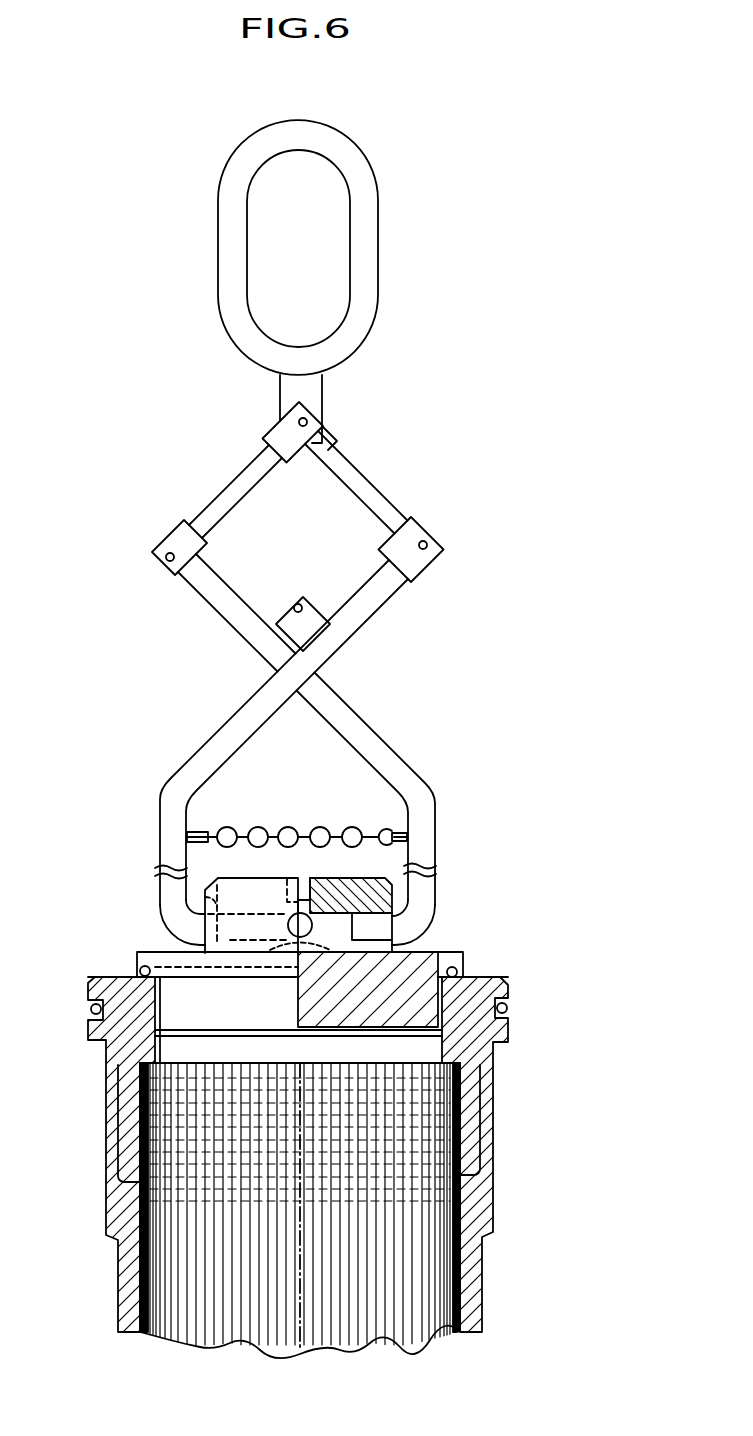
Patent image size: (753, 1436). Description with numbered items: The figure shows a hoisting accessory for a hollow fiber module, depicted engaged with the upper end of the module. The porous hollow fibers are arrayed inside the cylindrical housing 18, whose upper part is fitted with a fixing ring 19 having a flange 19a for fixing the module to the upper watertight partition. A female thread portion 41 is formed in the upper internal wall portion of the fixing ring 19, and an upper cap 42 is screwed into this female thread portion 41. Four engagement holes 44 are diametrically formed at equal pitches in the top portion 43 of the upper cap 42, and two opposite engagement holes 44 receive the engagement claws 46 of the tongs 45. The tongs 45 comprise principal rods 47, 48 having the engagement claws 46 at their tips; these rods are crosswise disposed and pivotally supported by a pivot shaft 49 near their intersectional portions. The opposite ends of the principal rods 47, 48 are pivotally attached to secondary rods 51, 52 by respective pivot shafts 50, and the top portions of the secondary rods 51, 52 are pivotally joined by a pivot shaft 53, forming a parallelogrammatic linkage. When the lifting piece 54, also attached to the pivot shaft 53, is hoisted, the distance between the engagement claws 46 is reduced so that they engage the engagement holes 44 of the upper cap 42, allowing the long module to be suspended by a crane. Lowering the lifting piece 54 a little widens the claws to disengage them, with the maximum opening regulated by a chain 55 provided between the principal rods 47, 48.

The cylindrical housing 18 is at (472, 1274).
The fixing ring 19 is at (490, 1163).
The flange 19a is at (510, 1027).
The female thread portion 41 is at (112, 1028).
The upper cap 42 is at (134, 963).
The top portion 43 is at (238, 887).
The engagement holes 44 is at (313, 912).
The tongs 45 is at (300, 729).
The engagement claws 46 is at (203, 943).
The principal rod 47 is at (230, 725).
The principal rod 48 is at (383, 748).
The pivot shaft 49 is at (303, 596).
The pivot shafts 50 is at (163, 542).
The secondary rod 51 is at (370, 488).
The secondary rod 52 is at (228, 488).
The pivot shaft 53 is at (308, 416).
The lifting piece 54 is at (372, 300).
The chain 55 is at (257, 822).